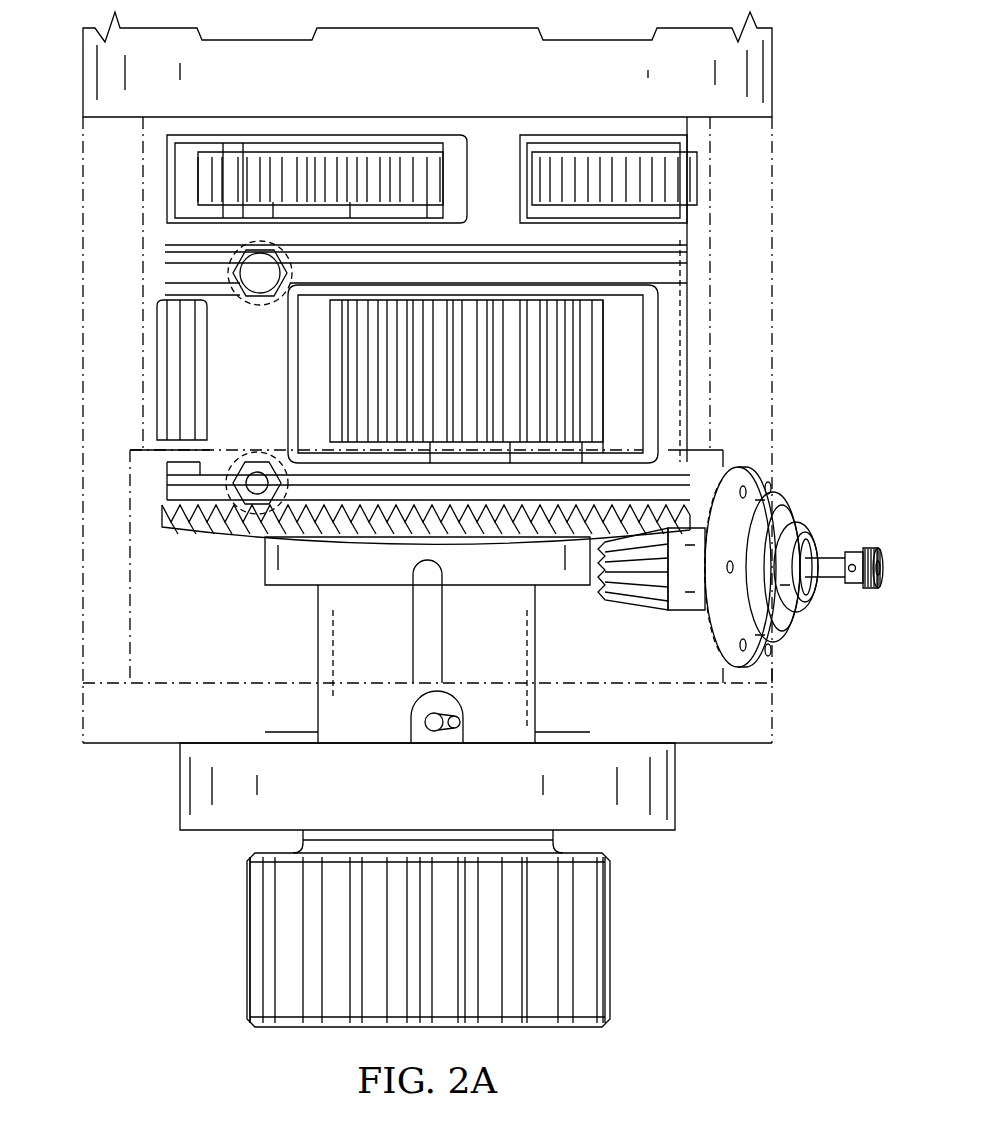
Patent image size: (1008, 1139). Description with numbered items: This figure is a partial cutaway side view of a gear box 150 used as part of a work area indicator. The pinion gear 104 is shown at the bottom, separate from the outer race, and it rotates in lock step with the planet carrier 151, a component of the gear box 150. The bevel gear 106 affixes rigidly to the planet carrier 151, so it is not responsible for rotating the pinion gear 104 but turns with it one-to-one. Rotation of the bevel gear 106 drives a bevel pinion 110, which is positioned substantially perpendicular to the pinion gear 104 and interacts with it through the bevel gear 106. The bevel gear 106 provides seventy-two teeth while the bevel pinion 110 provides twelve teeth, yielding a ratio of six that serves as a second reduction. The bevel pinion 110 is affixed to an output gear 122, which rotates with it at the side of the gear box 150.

The gear box 150 is at (784, 274).
The planet carrier 151 is at (177, 481).
The bevel gear 106 is at (550, 538).
The bevel pinion 110 is at (637, 608).
The output gear 122 is at (872, 588).
The pinion gear 104 is at (318, 1028).